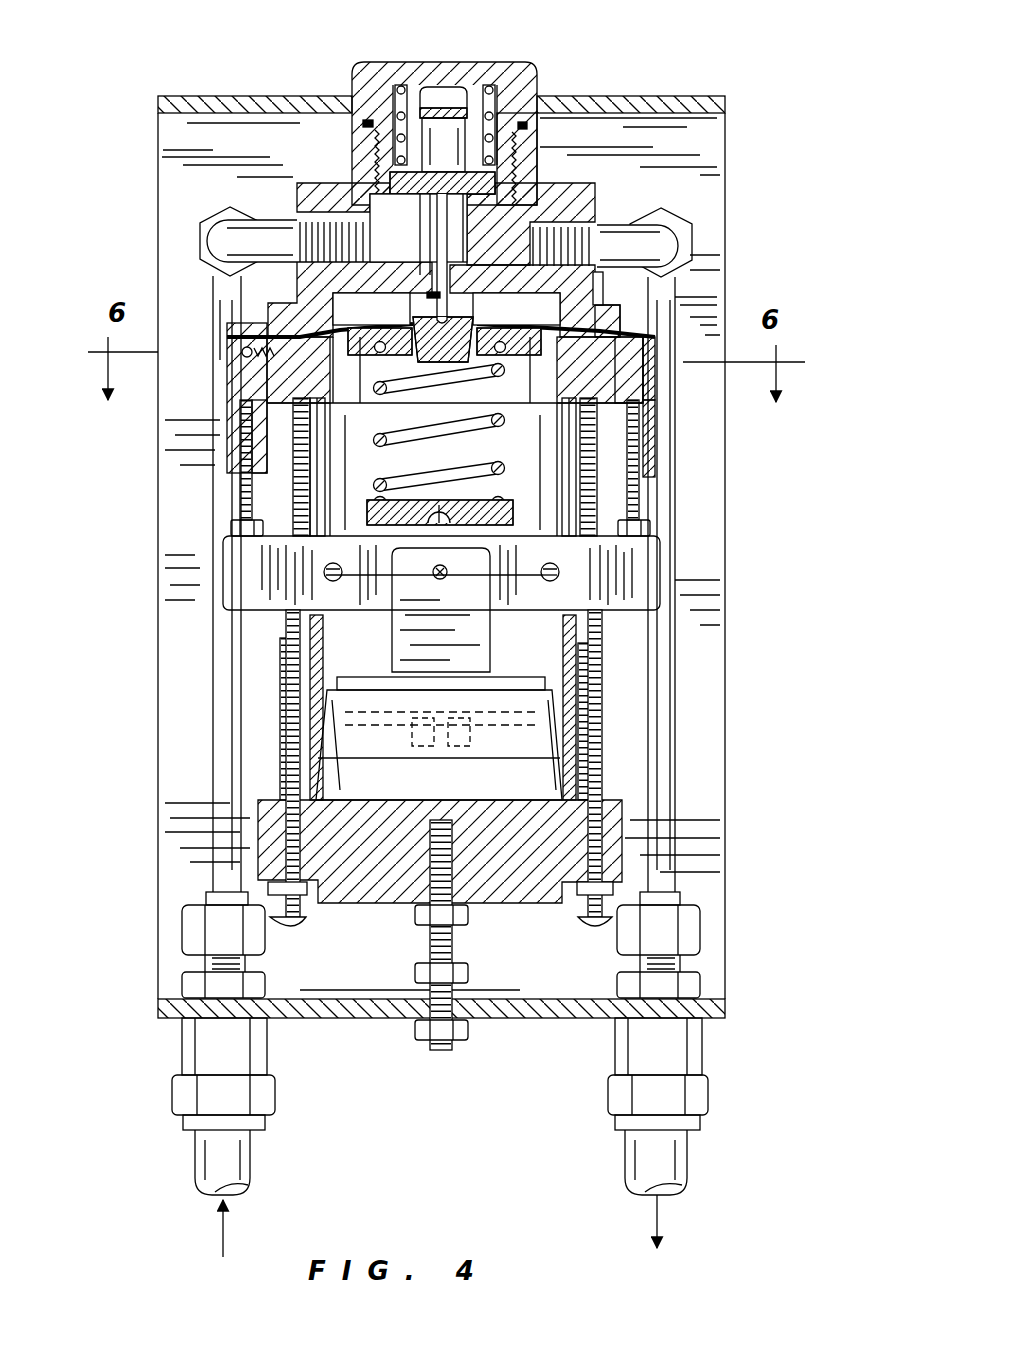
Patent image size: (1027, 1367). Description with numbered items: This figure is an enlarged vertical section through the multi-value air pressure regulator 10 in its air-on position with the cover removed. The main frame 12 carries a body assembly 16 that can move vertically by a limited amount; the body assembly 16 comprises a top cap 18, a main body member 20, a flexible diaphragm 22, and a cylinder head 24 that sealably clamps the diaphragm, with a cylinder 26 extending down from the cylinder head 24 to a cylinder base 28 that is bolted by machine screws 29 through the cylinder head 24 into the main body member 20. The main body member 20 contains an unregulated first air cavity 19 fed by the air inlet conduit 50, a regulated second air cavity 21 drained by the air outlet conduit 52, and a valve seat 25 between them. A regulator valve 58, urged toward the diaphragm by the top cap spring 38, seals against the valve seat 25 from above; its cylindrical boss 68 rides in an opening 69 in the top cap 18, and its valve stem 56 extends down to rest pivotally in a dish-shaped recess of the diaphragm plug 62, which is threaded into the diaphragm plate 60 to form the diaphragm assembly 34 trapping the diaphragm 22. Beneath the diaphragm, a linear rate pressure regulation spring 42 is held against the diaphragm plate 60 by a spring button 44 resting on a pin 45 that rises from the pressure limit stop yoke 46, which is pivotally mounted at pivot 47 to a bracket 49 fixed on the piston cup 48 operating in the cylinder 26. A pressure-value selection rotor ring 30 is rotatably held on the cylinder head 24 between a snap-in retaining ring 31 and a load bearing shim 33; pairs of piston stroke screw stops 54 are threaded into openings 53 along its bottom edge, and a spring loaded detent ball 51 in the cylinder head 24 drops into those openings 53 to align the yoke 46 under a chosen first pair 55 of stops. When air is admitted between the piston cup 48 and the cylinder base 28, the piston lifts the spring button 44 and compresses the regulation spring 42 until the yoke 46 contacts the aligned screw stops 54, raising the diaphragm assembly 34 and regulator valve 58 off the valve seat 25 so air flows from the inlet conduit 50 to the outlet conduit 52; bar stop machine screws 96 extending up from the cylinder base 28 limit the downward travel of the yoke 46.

The multi-value air pressure regulator 10 is at (740, 912).
The main frame 12 is at (700, 97).
The body assembly 16 is at (280, 734).
The top cap 18 is at (525, 62).
The unregulated first air cavity 19 is at (425, 205).
The main body member 20 is at (538, 147).
The regulated second air cavity 21 is at (423, 213).
The flexible diaphragm 22 is at (594, 312).
The cylinder head 24 is at (630, 370).
The valve seat 25 is at (578, 216).
The cylinder 26 is at (545, 660).
The cylinder base 28 is at (527, 882).
The machine screws 29 is at (283, 530).
The pressure-value selection rotor ring 30 is at (655, 445).
The snap-in retaining ring 31 is at (650, 336).
The load bearing shim 33 is at (228, 378).
The diaphragm assembly 34 is at (410, 318).
The top cap spring 38 is at (399, 86).
The pressure regulation spring 42 is at (437, 452).
The spring button 44 is at (480, 498).
The pin 45 is at (495, 535).
The pressure limit stop yoke 46 is at (643, 580).
The pivotal mounting 47 is at (440, 582).
The piston cup 48 is at (490, 758).
The bracket 49 is at (465, 620).
The air inlet conduit 50 is at (262, 232).
The spring loaded detent ball 51 is at (245, 352).
The air outlet conduit 52 is at (665, 246).
The openings 53 is at (245, 372).
The piston stroke screw stops 54 is at (243, 460).
The first pair of piston stroke screw stops 55 is at (231, 528).
The valve stem 56 is at (300, 246).
The regulator valve 58 is at (578, 196).
The diaphragm plate 60 is at (360, 376).
The diaphragm plug 62 is at (468, 318).
The cylindrical boss 68 is at (470, 112).
The opening 69 is at (440, 90).
The bar stop machine screws 96 is at (283, 716).